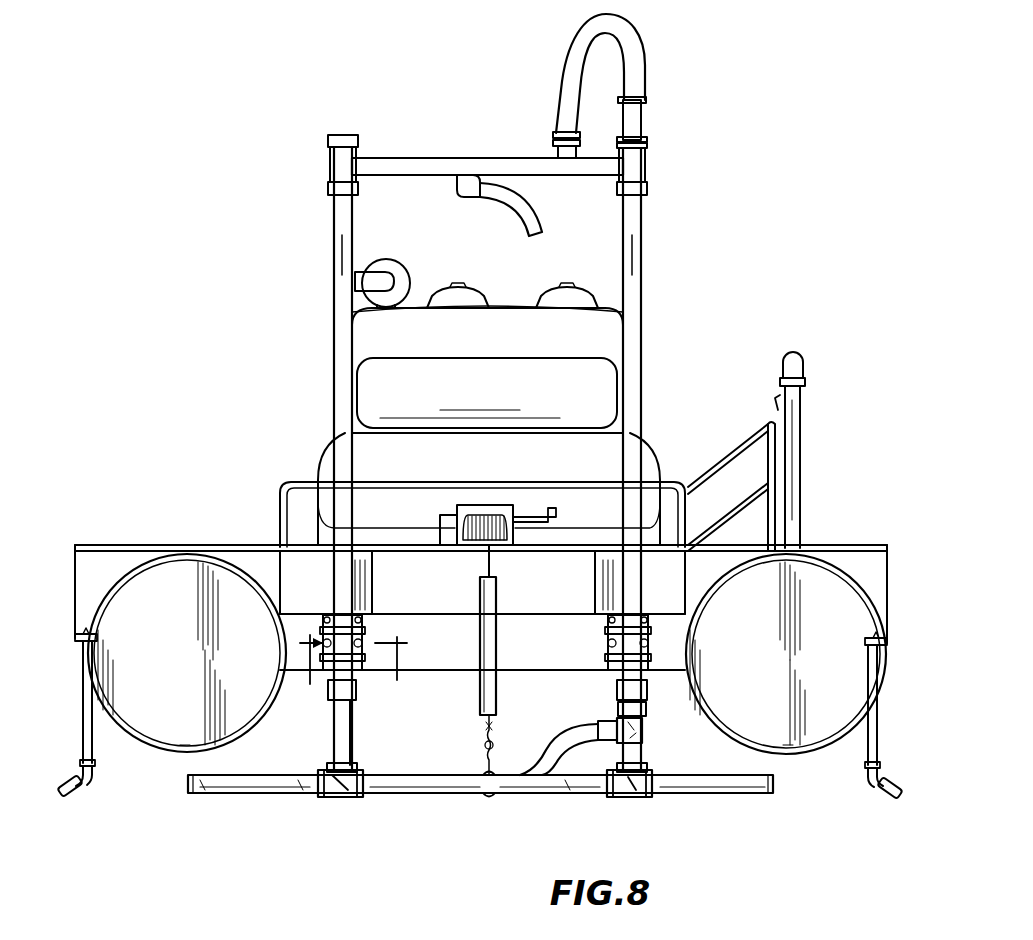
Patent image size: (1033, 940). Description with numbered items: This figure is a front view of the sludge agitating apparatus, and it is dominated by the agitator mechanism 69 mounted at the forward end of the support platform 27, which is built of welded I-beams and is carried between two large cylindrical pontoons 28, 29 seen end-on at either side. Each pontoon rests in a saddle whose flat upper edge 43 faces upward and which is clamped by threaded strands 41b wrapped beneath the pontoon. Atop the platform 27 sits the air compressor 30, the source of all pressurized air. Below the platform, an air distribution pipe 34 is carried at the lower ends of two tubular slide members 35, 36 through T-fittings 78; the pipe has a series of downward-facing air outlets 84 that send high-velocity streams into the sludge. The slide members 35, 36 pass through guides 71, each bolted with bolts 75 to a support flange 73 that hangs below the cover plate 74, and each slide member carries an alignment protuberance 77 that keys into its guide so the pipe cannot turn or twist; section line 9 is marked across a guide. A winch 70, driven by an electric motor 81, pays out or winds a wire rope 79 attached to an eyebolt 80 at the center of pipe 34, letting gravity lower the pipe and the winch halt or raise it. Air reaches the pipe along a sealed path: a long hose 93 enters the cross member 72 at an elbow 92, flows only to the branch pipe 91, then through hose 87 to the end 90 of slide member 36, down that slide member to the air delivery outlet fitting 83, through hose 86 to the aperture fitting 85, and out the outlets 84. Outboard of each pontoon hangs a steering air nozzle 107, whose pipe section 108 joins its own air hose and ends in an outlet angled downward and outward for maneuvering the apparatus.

The support platform 27 is at (525, 608).
The pontoon 28 is at (157, 585).
The pontoon 29 is at (818, 600).
The air compressor 30 is at (605, 330).
The air distribution pipe 34 is at (230, 790).
The tubular slide member 35 is at (333, 226).
The tubular slide member 36 is at (637, 208).
The strand 41b is at (148, 745).
The upper edge 43 is at (180, 545).
The agitator mechanism 69 is at (729, 299).
The winch 70 is at (470, 489).
The guide 71 is at (360, 660).
The cross member 72 is at (397, 163).
The support flange 73 is at (463, 655).
The cover plate 74 is at (303, 617).
The bolt 75 is at (365, 640).
The alignment protuberance 77 is at (340, 393).
The T-fitting 78 is at (340, 795).
The wire rope 79 is at (487, 565).
The eyebolt 80 is at (485, 758).
The electric driven motor 81 is at (445, 528).
The air delivery outlet fitting 83 is at (640, 728).
The air outlet 84 is at (200, 790).
The aperture fitting 85 is at (490, 800).
The flexible high-pressure air hose 86 is at (565, 745).
The flexible high-pressure air hose 87 is at (632, 50).
The end 90 is at (647, 112).
The branch pipe 91 is at (558, 152).
The elbow 92 is at (460, 196).
The flexible high-pressure air hose 93 is at (528, 213).
The air nozzle 107 is at (65, 800).
The section of pipe 108 is at (82, 720).
The section line 9- 9 is at (354, 670).